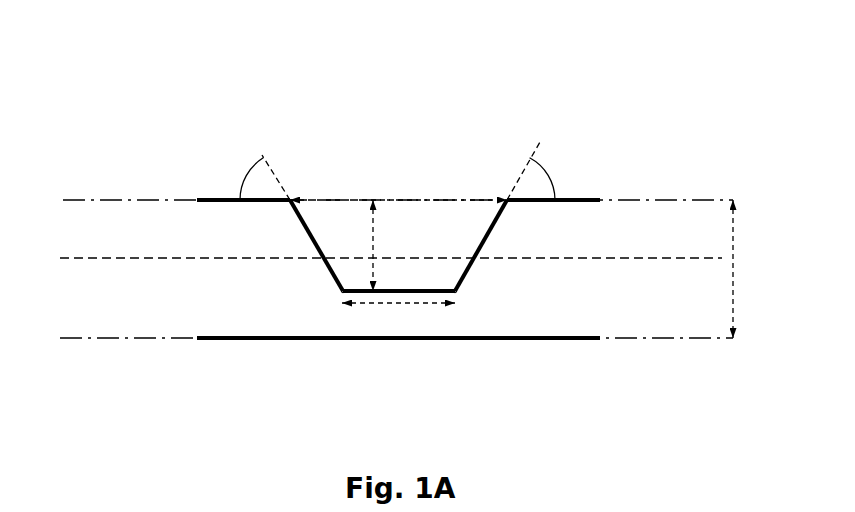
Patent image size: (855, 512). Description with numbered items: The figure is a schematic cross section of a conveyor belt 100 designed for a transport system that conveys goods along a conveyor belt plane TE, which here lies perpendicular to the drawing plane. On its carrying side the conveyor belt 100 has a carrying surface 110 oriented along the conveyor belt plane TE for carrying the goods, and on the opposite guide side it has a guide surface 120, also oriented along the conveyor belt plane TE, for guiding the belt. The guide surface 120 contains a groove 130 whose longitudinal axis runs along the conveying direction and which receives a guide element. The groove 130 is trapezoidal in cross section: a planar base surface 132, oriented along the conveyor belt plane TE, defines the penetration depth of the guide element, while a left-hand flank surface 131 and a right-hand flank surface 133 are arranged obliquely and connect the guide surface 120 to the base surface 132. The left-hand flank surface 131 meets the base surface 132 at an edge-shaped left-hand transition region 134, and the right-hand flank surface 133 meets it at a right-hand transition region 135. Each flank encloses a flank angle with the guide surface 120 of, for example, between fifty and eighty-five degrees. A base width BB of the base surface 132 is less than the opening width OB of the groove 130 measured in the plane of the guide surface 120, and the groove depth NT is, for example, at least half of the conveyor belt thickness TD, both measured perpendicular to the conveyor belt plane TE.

The conveyor belt 100 is at (367, 218).
The carrying surface 110 is at (359, 374).
The guide surface 120 is at (364, 163).
The groove 130 is at (395, 174).
The left-hand flank surface 131 is at (318, 233).
The base surface 132 is at (399, 187).
The right-hand flank surface 133 is at (481, 236).
The left-hand transition region 134 is at (216, 308).
The right-hand transition region 135 is at (579, 306).
The groove depth NT is at (283, 162).
The opening width OB is at (403, 110).
The base width BB is at (372, 364).
The conveyor belt thickness TD is at (774, 267).
The conveyor belt plane TE is at (684, 184).